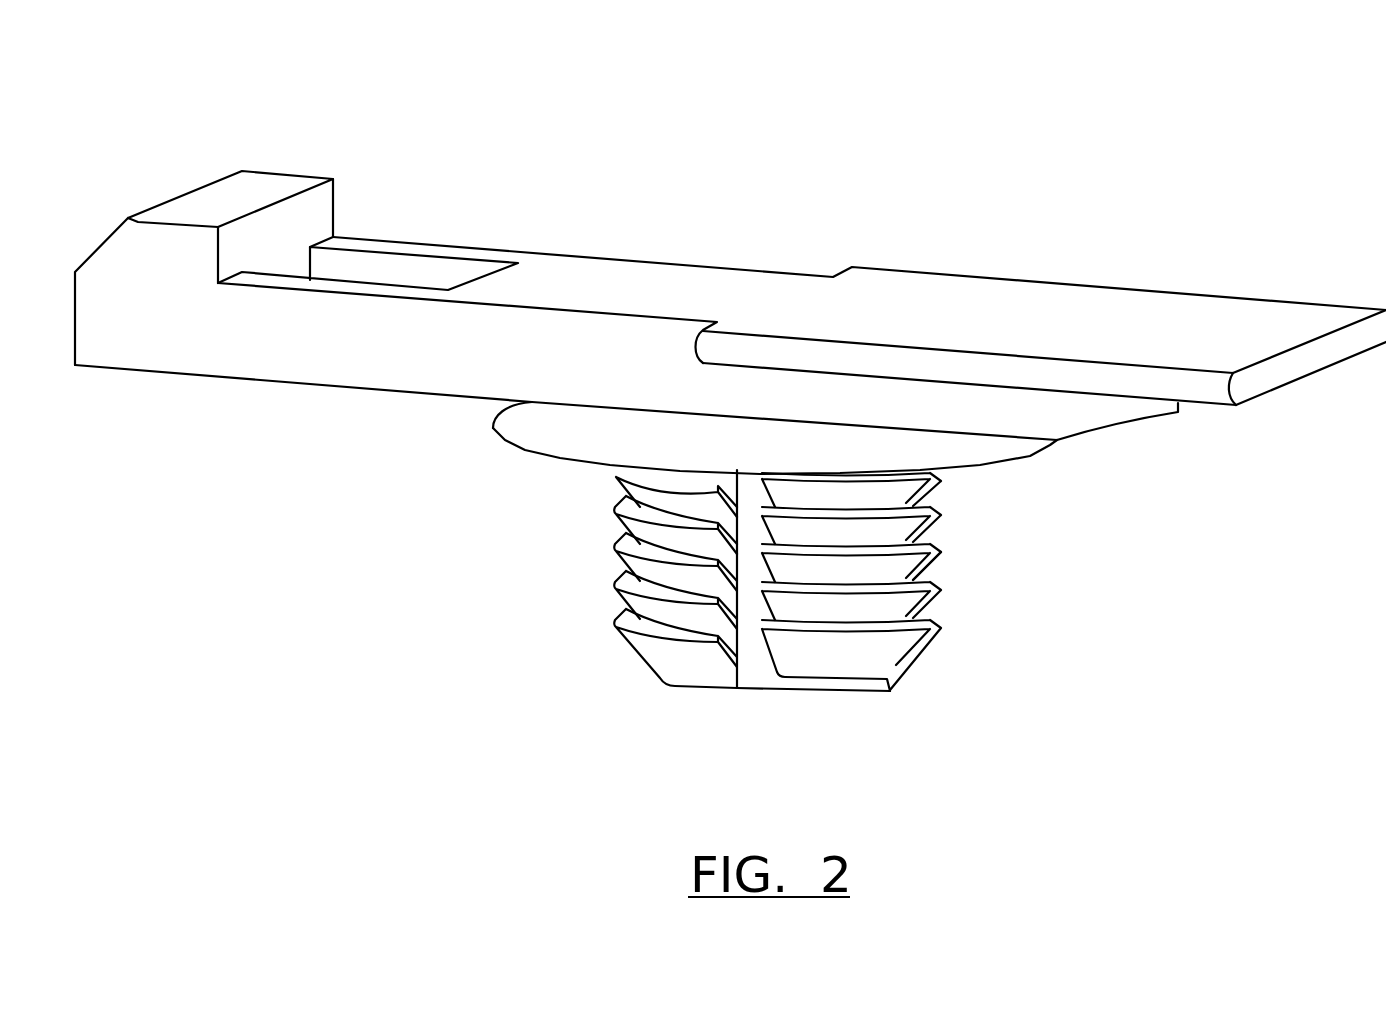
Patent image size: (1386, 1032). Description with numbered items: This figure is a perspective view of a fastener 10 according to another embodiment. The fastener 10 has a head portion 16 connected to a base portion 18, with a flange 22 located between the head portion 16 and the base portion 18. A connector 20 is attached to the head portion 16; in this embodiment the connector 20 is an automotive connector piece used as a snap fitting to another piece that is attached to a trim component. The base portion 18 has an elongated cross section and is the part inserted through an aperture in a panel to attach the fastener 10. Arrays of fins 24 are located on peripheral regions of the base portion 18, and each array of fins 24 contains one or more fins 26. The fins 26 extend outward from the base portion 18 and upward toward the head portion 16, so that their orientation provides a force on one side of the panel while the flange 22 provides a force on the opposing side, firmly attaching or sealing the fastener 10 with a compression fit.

The fastener 10 is at (1008, 114).
The head portion 16 is at (746, 183).
The connector 20 is at (1117, 285).
The flange 22 is at (1047, 442).
The base portion 18 is at (1034, 626).
The array of fins 24 is at (737, 698).
The fin 26 is at (943, 557).